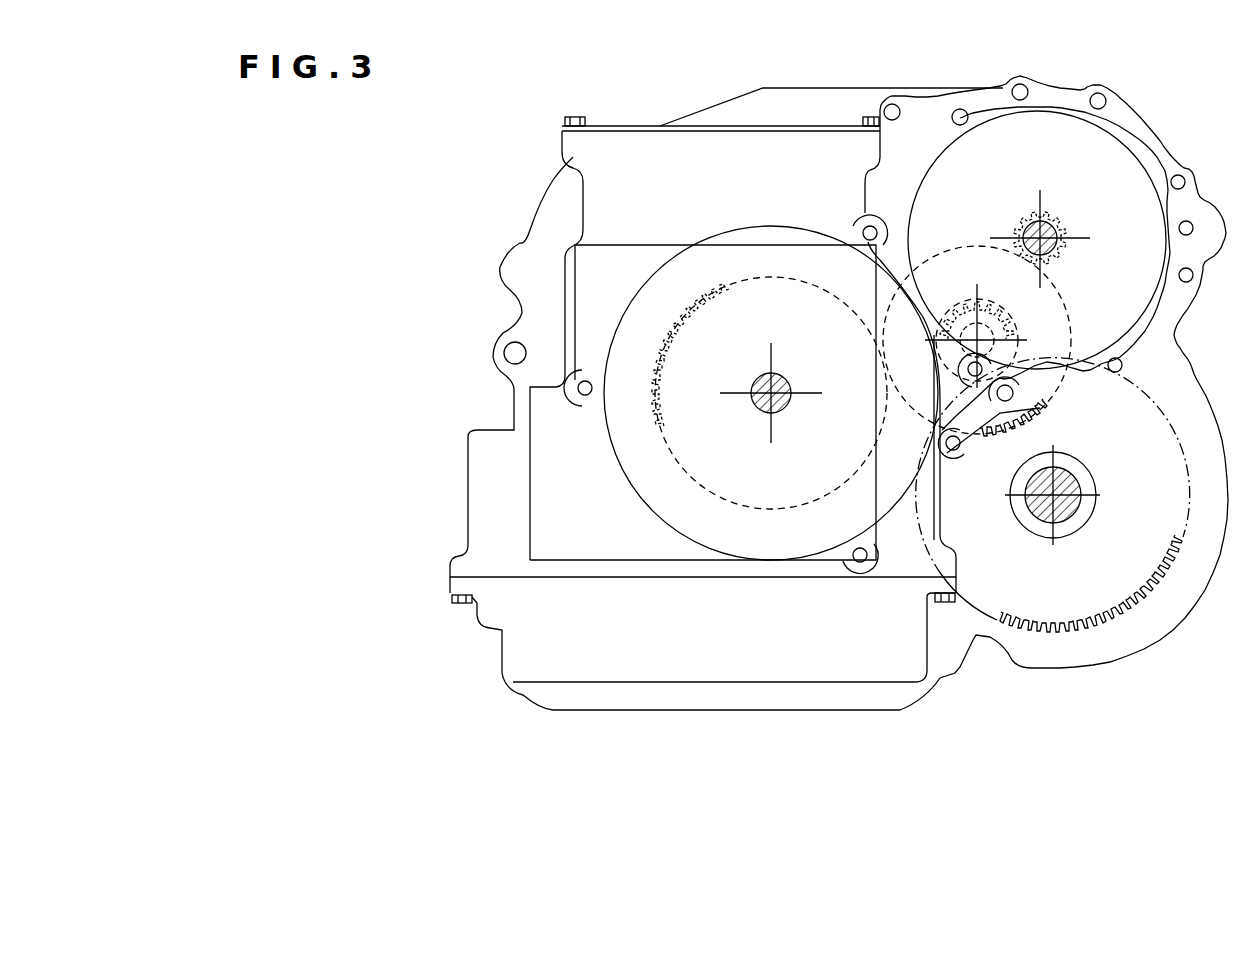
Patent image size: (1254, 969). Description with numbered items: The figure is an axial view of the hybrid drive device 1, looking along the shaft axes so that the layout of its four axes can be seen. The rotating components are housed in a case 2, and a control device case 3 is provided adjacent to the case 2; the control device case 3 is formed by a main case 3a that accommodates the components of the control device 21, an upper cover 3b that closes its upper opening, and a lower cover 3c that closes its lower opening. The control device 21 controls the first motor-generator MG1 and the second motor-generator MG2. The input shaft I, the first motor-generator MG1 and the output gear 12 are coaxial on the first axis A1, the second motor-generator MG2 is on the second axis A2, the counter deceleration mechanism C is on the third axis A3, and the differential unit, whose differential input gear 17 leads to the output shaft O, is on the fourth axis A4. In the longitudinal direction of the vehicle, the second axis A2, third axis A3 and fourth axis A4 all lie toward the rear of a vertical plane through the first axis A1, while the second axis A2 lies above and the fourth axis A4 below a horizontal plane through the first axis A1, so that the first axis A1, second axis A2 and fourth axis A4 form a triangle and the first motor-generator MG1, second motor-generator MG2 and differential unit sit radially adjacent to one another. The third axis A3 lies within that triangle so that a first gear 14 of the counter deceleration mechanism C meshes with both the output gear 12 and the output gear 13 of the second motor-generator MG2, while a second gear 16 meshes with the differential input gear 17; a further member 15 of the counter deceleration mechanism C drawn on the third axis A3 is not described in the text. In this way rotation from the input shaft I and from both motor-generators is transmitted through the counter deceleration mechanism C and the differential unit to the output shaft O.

The hybrid drive device 1 is at (458, 186).
The case 2 is at (1145, 112).
The control device case 3 is at (580, 197).
The main case 3a is at (562, 246).
The upper cover 3b is at (622, 124).
The lower oil pan portion of case 3c is at (502, 657).
The output gear 12 is at (655, 368).
The output gear of the second motor-generator 13 is at (1058, 228).
The first gear 14 is at (1047, 405).
The counter gear 15 is at (977, 340).
The second gear 16 is at (990, 305).
The differential input gear 17 is at (1145, 600).
The control device 21 is at (662, 244).
The first motor-generator MG1 is at (622, 455).
The second motor-generator MG2 is at (1142, 170).
The input shaft I is at (788, 382).
The output shaft O is at (1067, 522).
The first axis A1 is at (788, 405).
The second axis A2 is at (1060, 250).
The third axis A3 is at (1005, 324).
The fourth axis A4 is at (1083, 483).
The counter deceleration mechanism C is at (942, 236).